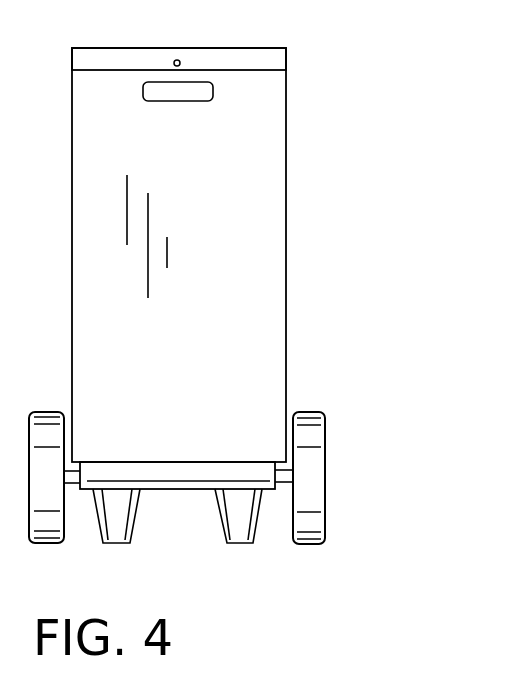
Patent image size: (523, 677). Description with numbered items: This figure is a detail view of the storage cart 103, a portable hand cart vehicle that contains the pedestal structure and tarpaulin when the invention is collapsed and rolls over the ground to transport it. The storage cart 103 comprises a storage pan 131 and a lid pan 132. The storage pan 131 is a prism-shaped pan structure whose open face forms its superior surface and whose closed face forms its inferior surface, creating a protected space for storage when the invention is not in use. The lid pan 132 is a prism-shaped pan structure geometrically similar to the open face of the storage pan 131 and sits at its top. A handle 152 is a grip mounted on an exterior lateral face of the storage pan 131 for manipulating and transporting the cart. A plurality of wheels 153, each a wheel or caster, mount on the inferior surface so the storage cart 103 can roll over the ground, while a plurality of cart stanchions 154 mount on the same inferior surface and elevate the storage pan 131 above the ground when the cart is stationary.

The storage cart 103 is at (299, 116).
The storage pan 131 is at (275, 153).
The lid pan 132 is at (227, 53).
The handle 152 is at (196, 98).
The plurality of wheels 153 is at (325, 440).
The plurality of cart stanchions 154 is at (128, 543).